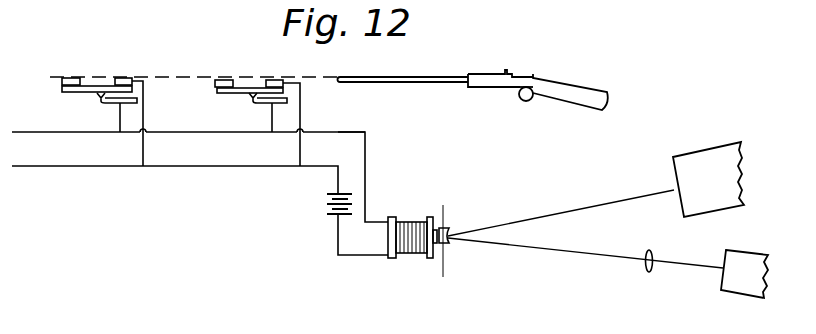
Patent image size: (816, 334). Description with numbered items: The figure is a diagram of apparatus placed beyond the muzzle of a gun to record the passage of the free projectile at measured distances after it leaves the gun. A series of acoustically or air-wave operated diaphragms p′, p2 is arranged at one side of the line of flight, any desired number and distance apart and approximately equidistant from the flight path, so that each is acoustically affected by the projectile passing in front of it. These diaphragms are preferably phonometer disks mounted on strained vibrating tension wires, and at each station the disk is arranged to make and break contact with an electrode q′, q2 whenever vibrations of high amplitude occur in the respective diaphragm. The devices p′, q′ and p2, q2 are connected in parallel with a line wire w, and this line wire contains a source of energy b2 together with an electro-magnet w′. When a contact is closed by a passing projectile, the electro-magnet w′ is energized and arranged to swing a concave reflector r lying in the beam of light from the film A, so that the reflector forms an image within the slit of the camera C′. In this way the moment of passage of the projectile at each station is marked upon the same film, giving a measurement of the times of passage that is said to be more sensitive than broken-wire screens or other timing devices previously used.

The acoustically operated diaphragm p2 is at (77, 90).
The electrode q2 is at (110, 103).
The acoustically operated diaphragm p′ is at (238, 90).
The electrode q′ is at (268, 103).
The line wire w is at (323, 167).
The source of energy b2 is at (332, 212).
The electro-magnet w′ is at (407, 227).
The concave reflector r is at (449, 243).
The camera C′ is at (718, 142).
The film A is at (744, 297).